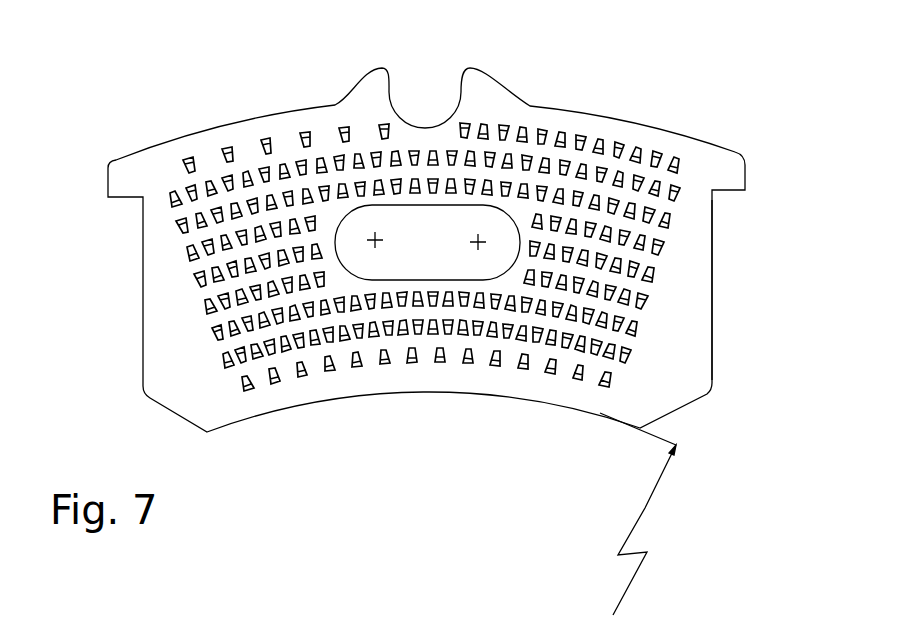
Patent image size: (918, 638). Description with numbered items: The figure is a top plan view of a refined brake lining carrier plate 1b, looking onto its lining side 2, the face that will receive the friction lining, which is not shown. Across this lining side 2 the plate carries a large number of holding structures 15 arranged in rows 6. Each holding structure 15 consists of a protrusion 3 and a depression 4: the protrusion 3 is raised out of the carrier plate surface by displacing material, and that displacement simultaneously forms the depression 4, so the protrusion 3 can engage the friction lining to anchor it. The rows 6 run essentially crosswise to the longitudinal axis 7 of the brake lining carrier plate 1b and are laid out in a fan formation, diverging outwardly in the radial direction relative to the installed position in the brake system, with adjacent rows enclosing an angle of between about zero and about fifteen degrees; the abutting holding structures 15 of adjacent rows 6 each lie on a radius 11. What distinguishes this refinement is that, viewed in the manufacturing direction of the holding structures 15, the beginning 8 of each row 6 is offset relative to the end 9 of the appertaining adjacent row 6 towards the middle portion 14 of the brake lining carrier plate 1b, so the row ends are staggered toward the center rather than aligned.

The brake lining carrier plate 1b is at (732, 125).
The lining side 2 is at (160, 242).
The protrusion 3 is at (505, 130).
The depression 4 is at (512, 130).
The rows 6 is at (248, 398).
The longitudinal axis 7 is at (687, 285).
The beginning of row 8 is at (177, 173).
The end of row 9 is at (188, 160).
The radius 11 is at (645, 508).
The middle portion 14 is at (192, 282).
The holding structures 15 is at (177, 217).